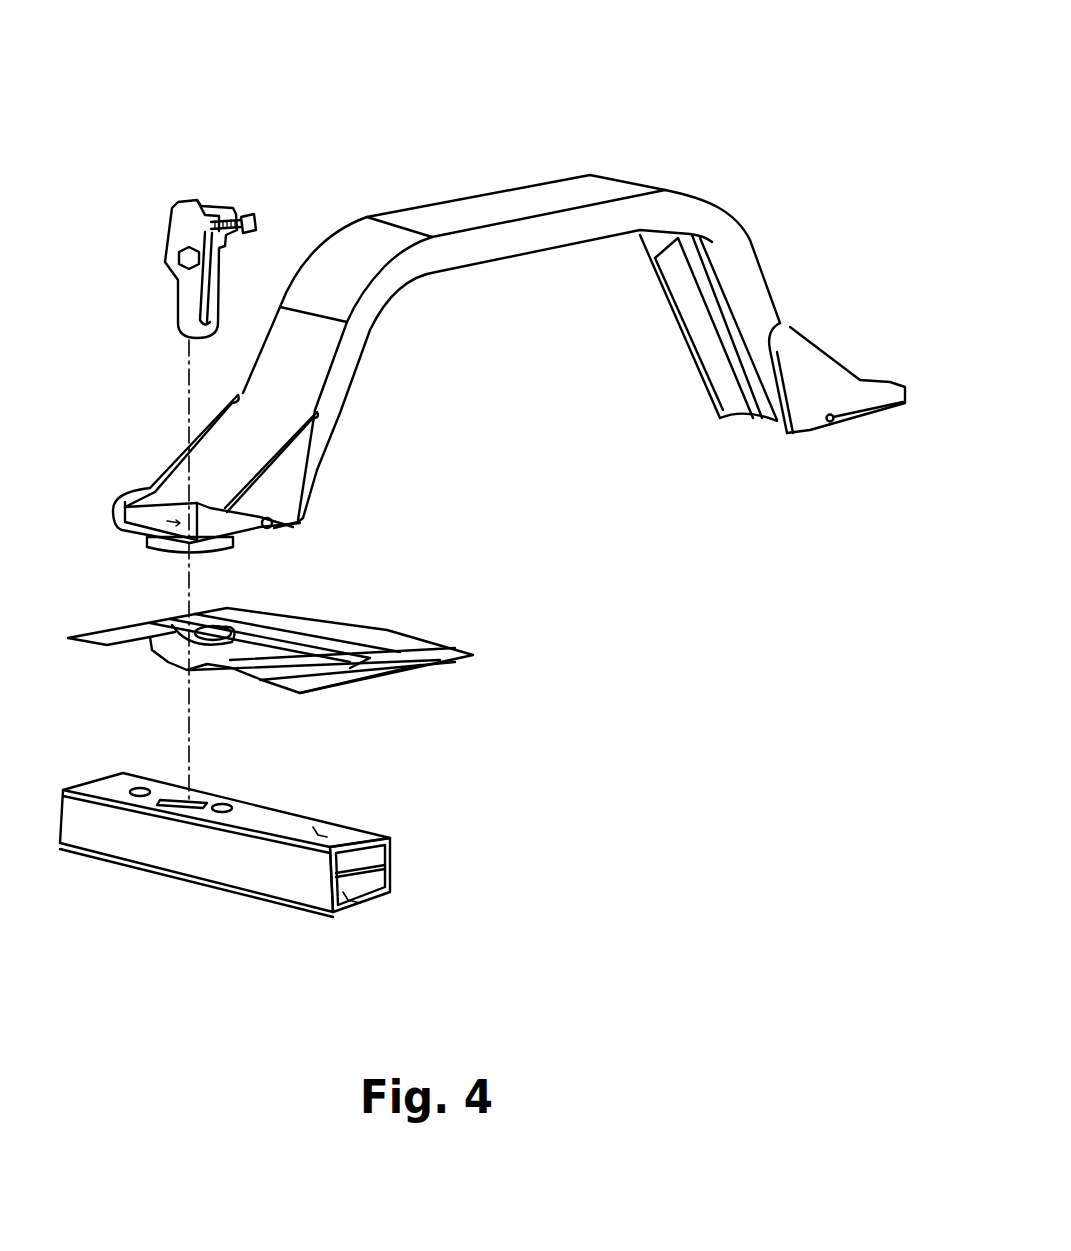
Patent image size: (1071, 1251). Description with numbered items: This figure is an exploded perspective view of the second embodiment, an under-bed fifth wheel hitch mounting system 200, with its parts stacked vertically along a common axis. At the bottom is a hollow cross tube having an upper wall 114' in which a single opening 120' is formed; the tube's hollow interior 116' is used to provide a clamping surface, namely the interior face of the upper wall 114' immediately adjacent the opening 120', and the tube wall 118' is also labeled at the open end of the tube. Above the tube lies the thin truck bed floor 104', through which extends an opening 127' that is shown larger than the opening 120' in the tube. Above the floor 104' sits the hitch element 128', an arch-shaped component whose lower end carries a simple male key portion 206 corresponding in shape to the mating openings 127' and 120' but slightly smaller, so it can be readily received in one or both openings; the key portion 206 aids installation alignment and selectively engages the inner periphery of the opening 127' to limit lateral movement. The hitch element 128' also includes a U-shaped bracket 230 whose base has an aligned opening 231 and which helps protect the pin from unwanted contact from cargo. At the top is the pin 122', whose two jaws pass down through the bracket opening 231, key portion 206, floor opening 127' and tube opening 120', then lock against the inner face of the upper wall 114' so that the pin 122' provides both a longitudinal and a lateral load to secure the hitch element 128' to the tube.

The under-bed fifth wheel hitch mounting system 200 is at (665, 115).
The pin 122' is at (186, 245).
The hitch element 128' is at (772, 316).
The U-shaped bracket 230 is at (150, 487).
The aligned opening 231 is at (130, 534).
The male key portion 206 is at (220, 545).
The opening 127' is at (146, 618).
The floor 104' is at (266, 665).
The opening 120' is at (234, 779).
The upper wall 114' is at (285, 864).
The hollow interior 116' is at (420, 875).
The rail wall 118' is at (394, 936).